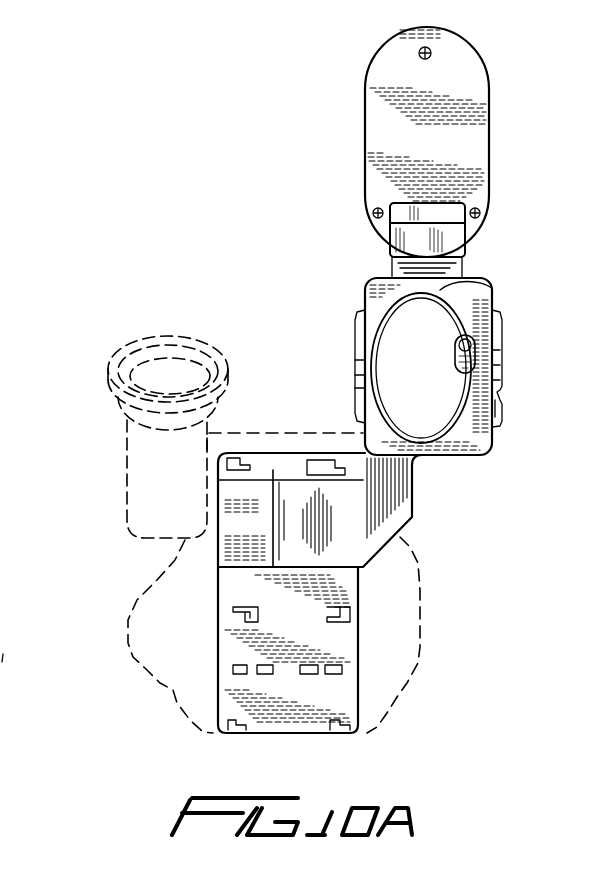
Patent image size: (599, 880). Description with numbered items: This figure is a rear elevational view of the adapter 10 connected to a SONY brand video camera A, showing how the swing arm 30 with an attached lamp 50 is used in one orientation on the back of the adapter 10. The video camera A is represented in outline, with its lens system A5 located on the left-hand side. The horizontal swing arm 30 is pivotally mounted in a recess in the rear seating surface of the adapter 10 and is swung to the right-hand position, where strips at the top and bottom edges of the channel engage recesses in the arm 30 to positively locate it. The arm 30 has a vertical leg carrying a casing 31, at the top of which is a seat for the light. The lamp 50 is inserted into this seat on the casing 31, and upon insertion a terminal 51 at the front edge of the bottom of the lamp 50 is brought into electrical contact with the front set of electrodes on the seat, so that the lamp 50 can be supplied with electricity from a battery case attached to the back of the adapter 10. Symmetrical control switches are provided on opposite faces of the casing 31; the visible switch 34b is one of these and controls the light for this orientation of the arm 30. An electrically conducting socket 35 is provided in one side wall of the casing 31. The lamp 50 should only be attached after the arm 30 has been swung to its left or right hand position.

The lamp 50 is at (376, 128).
The terminal 51 is at (413, 277).
The casing 31 is at (378, 325).
The control switch 34b is at (470, 342).
The electrically conducting socket 35 is at (500, 407).
The swing arm 30 is at (412, 508).
The adapter 10 is at (350, 642).
The lens system A5 is at (117, 363).
The video camera A is at (150, 657).